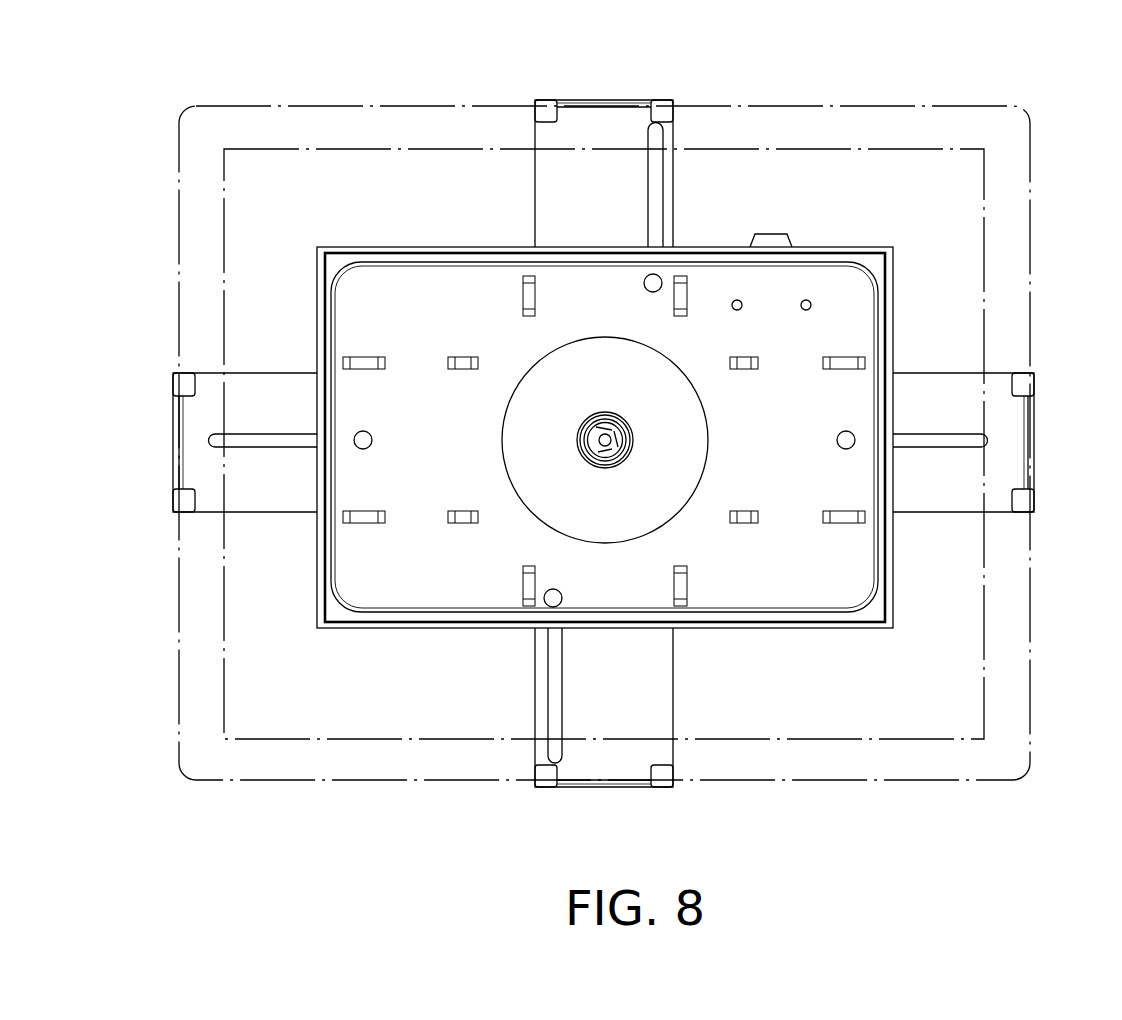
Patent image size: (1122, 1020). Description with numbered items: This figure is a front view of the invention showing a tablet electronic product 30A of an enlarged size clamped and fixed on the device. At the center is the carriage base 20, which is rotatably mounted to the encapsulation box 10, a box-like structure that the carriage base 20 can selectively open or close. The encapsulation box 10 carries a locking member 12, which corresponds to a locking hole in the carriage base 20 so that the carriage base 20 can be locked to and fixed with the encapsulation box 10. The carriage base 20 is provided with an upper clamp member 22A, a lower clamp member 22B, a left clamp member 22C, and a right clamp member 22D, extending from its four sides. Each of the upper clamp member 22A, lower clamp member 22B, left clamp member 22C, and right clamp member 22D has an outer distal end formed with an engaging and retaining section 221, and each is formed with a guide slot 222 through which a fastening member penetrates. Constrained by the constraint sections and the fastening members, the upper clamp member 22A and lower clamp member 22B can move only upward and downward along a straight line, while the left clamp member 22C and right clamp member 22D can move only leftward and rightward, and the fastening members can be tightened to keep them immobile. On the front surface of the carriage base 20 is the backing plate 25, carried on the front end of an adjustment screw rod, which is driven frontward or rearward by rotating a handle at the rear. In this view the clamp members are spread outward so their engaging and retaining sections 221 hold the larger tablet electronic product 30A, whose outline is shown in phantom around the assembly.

The encapsulation box 10 is at (826, 247).
The locking member 12 is at (770, 234).
The carriage base 20 is at (400, 293).
The backing plate 25 is at (690, 441).
The upper clamp member 22A is at (535, 178).
The lower clamp member 22B is at (673, 697).
The left clamp member 22C is at (253, 513).
The right clamp member 22D is at (930, 513).
The engaging and retaining section 221 is at (604, 99).
The guide slot 222 is at (655, 205).
The tablet electronic product 30A is at (868, 105).